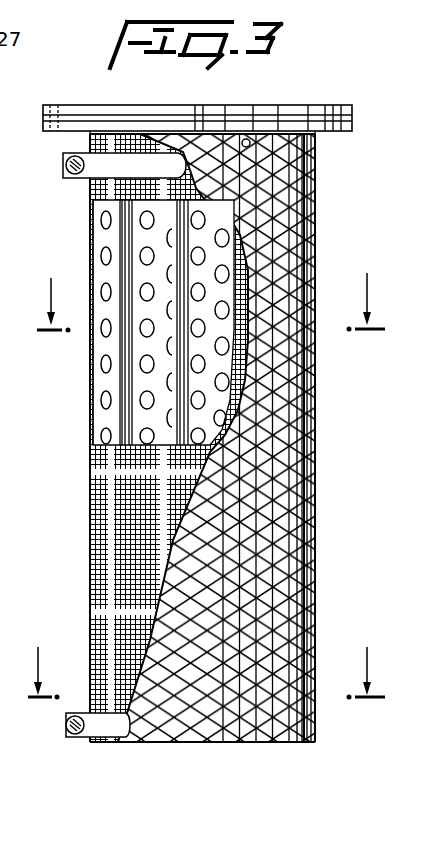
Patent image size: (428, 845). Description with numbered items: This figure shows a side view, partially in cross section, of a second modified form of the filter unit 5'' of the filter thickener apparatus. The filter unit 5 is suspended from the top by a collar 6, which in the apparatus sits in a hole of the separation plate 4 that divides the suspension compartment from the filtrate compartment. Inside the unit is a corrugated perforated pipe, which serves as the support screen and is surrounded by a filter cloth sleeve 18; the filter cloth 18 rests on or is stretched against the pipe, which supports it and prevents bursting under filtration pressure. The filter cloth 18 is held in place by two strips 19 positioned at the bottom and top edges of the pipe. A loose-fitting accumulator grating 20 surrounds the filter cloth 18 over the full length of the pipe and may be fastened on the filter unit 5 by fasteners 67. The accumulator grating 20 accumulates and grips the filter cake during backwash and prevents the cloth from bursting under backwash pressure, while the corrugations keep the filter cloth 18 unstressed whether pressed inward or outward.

The collar 6 is at (352, 108).
The fastener 67 is at (248, 139).
The strip 19 is at (112, 163).
The filter cloth sleeve 18 is at (88, 568).
The accumulator grating 20 is at (315, 488).
The filter unit 5'' is at (119, 322).
The filter unit 5 is at (211, 315).
The separation plate 4 is at (206, 684).